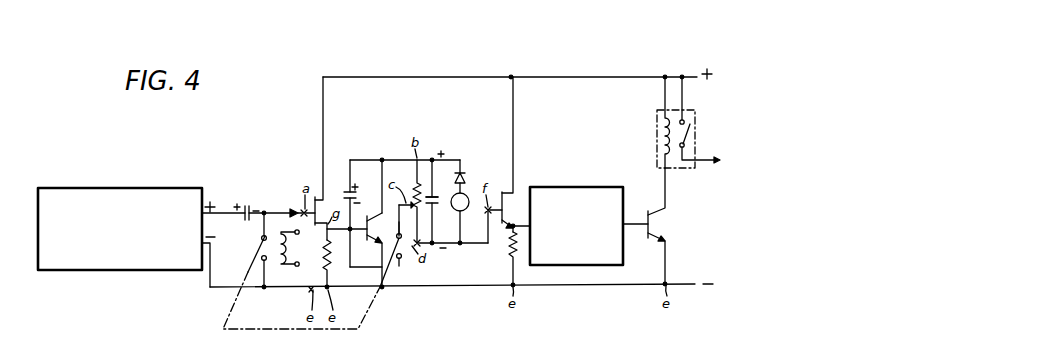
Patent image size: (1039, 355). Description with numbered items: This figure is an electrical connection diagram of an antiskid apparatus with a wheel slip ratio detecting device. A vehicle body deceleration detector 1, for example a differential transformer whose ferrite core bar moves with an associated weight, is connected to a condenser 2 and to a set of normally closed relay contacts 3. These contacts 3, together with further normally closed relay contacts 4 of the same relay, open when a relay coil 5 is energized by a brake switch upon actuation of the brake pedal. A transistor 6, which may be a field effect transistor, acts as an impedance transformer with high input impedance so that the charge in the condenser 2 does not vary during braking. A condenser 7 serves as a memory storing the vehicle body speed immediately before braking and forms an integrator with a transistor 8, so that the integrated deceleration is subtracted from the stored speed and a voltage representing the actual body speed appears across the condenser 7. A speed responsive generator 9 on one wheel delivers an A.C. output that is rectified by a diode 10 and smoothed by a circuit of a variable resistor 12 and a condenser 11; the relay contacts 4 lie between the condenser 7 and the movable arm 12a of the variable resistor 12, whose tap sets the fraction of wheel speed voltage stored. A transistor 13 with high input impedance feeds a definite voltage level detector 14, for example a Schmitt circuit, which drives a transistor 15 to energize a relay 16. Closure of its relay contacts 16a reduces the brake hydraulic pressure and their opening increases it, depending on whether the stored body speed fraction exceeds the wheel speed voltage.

The vehicle body deceleration detector 1 is at (119, 190).
The condenser 2 is at (247, 206).
The normally closed relay contacts 3 is at (268, 232).
The normally closed relay contacts 4 is at (401, 260).
The relay coil 5 is at (292, 229).
The transistor 6 is at (323, 198).
The condenser 7 is at (359, 195).
The transistor 8 is at (376, 240).
The speed responsive generator 9 is at (465, 208).
The diode 10 is at (464, 178).
The condenser 11 is at (434, 196).
The variable resistor 12 is at (452, 195).
The movable arm 12a is at (398, 222).
The transistor 13 is at (509, 231).
The definite voltage level detector 14 is at (568, 266).
The transistor 15 is at (667, 218).
The relay 16 is at (696, 106).
The relay contacts 16a is at (697, 134).